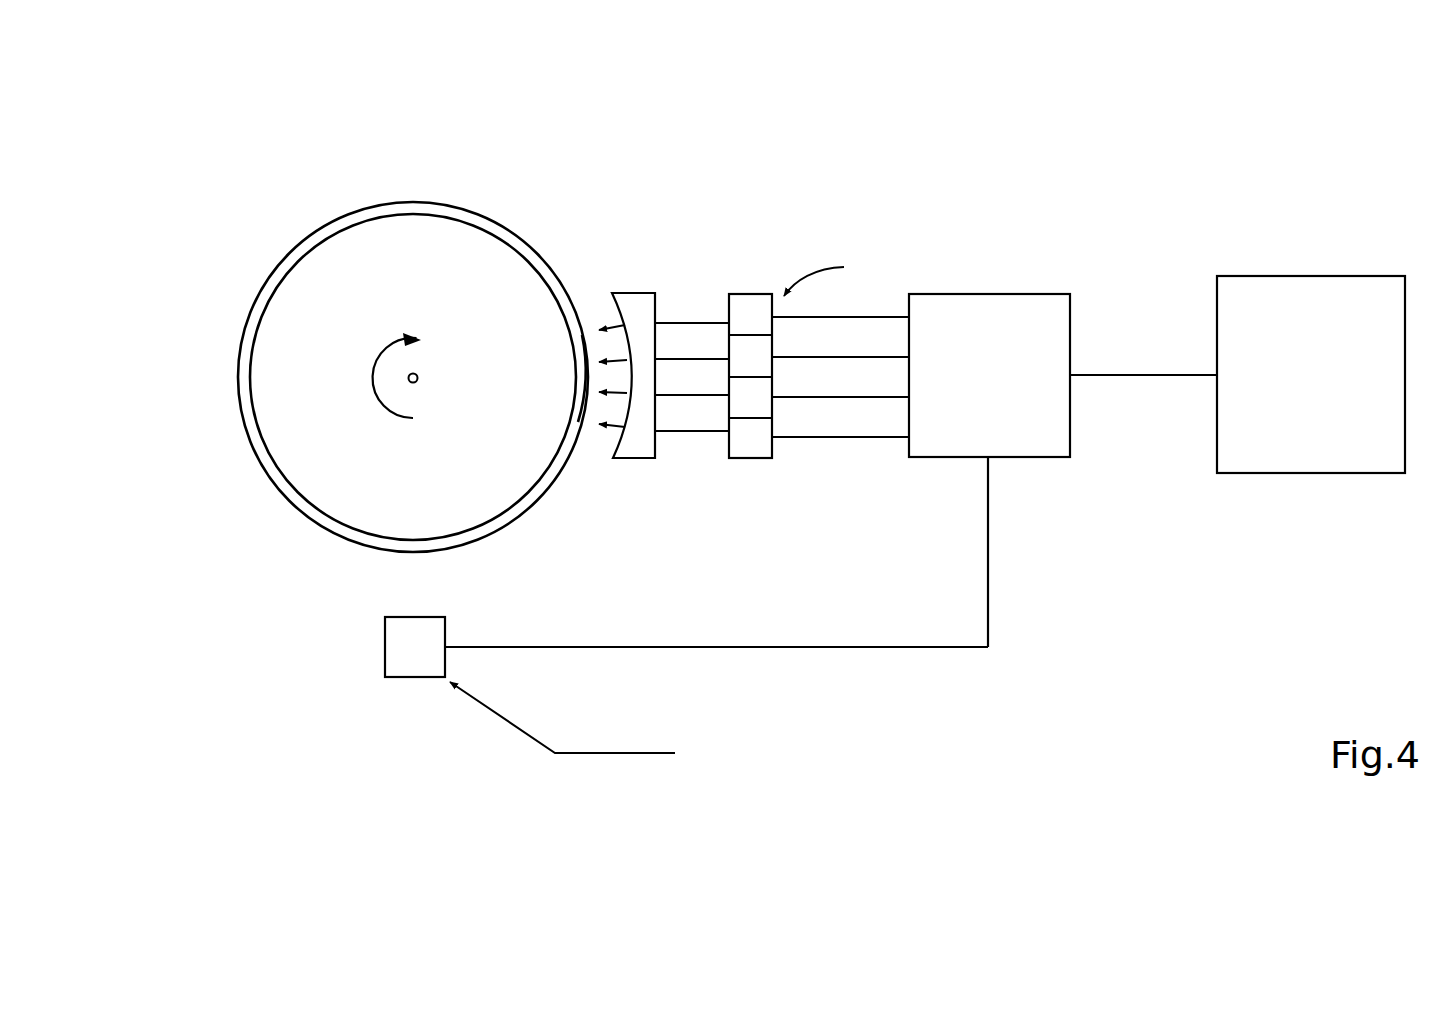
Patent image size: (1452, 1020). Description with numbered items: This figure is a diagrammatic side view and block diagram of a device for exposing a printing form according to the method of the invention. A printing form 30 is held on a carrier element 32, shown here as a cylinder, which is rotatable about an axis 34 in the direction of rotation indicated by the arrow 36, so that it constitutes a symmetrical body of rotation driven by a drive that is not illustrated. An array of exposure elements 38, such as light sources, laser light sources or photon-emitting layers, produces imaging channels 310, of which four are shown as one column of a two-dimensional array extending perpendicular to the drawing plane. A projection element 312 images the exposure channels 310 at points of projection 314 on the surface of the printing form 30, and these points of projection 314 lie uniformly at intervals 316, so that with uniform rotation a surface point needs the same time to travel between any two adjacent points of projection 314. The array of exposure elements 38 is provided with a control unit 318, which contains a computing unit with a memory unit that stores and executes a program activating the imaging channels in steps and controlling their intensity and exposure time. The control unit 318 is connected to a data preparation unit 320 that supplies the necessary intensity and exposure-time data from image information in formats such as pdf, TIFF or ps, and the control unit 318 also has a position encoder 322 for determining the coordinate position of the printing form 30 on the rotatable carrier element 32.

The printing form 30 is at (472, 215).
The carrier element 32 is at (325, 282).
The axis 34 is at (407, 383).
The arrow 36 is at (405, 379).
The exposure elements 38 is at (766, 286).
The imaging channels 310 is at (700, 359).
The projection element 312 is at (633, 293).
The points of projection 314 is at (588, 330).
The intervals 316 is at (575, 400).
The control unit 318 is at (988, 305).
The data preparation unit 320 is at (1327, 287).
The position encoder 322 is at (410, 667).